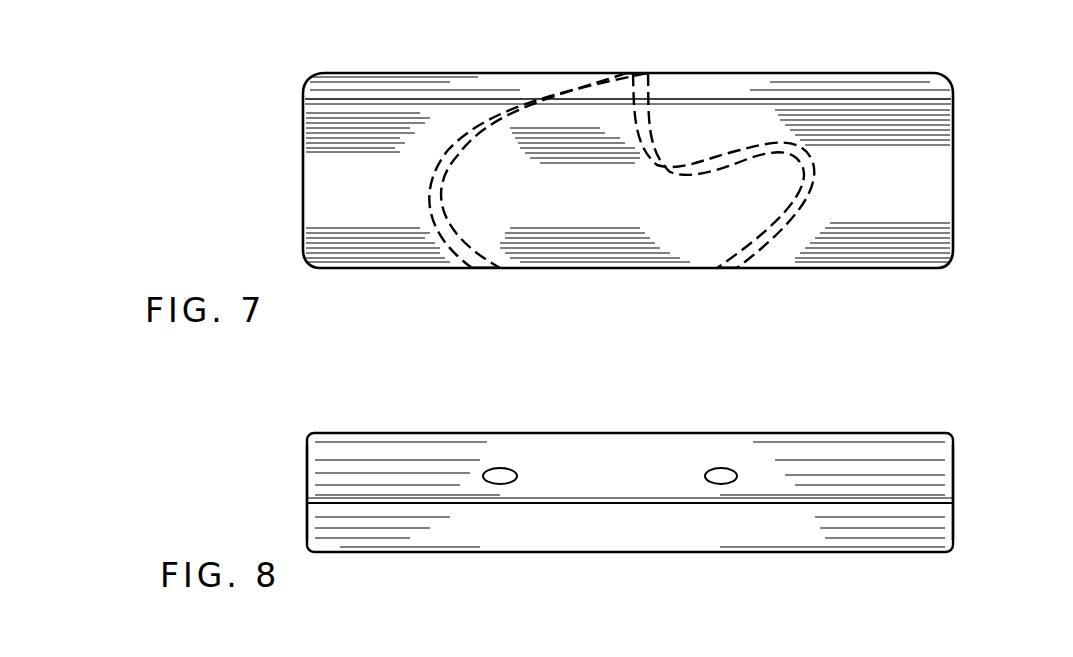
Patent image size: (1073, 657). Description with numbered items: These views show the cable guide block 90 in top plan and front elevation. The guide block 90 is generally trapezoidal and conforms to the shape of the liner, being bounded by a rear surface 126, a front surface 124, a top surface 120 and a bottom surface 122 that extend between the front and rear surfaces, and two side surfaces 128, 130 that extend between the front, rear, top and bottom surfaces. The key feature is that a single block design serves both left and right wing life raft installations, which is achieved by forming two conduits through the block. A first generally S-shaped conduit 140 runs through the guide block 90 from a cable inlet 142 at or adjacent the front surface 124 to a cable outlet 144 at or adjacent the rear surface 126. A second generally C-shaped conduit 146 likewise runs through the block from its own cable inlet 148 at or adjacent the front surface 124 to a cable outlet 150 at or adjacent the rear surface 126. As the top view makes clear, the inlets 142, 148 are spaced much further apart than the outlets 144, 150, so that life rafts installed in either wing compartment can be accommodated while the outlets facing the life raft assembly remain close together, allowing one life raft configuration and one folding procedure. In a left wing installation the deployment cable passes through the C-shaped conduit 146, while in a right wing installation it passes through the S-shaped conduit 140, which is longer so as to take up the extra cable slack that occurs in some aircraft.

In FIG. 7, the cable guide block 90 is at (949, 77).
In FIG. 8, the cable guide block 90 is at (930, 430).
In FIG. 7, the top surface 120 is at (917, 211).
In FIG. 8, the top surface 120 is at (527, 433).
In FIG. 8, the bottom surface 122 is at (631, 536).
In FIG. 7, the front surface 124 is at (842, 270).
In FIG. 8, the front surface 124 is at (631, 476).
In FIG. 7, the rear surface 126 is at (805, 73).
In FIG. 7, the side surface 128 is at (303, 157).
In FIG. 8, the side surface 128 is at (307, 478).
In FIG. 7, the side surface 130 is at (953, 178).
In FIG. 8, the side surface 130 is at (953, 500).
In FIG. 7, the S-shaped conduit 140 is at (674, 178).
In FIG. 7, the cable inlet 142 is at (720, 272).
In FIG. 8, the cable inlet 142 is at (722, 468).
In FIG. 7, the cable outlet 144 is at (651, 72).
In FIG. 7, the C-shaped conduit 146 is at (441, 192).
In FIG. 7, the cable inlet 148 is at (497, 272).
In FIG. 8, the cable inlet 148 is at (500, 468).
In FIG. 7, the cable outlet 150 is at (632, 72).